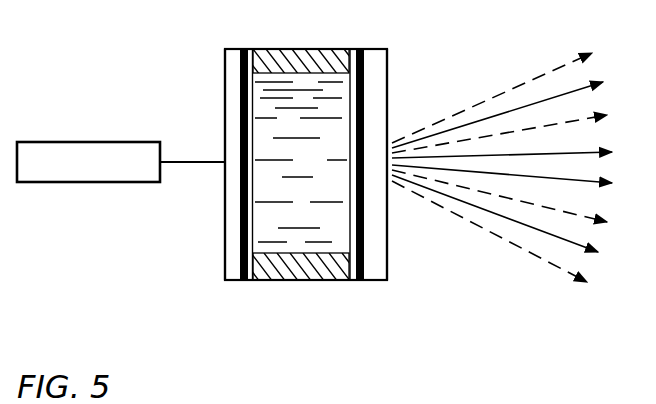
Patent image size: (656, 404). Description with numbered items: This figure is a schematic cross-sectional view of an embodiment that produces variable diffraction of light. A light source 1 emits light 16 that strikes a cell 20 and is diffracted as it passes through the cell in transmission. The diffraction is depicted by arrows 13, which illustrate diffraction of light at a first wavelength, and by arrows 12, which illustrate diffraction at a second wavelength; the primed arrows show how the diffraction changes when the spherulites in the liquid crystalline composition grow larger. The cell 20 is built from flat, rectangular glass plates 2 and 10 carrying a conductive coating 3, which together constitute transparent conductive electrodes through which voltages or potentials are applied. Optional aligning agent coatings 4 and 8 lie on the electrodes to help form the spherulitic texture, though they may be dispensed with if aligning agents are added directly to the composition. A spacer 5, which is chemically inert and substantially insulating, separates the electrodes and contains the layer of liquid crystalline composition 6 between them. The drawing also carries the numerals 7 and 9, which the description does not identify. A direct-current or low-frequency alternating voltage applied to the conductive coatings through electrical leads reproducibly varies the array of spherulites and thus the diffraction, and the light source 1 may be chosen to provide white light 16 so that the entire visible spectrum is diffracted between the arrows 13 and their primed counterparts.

The light source 1 is at (137, 142).
The light 16 is at (173, 160).
The glass plate 2 is at (233, 49).
The conductive coating 3 is at (243, 280).
The aligning agent coating 4 is at (250, 49).
The spacer 5 is at (303, 49).
The liquid crystalline composition 6 is at (295, 247).
The liquid crystal layer 7 is at (301, 162).
The aligning agent coating 8 is at (353, 49).
The second electrode 9 is at (358, 280).
The glass plate 10 is at (377, 49).
The arrows 12 is at (502, 162).
The arrows 13 is at (497, 166).
The cell 20 is at (208, 287).